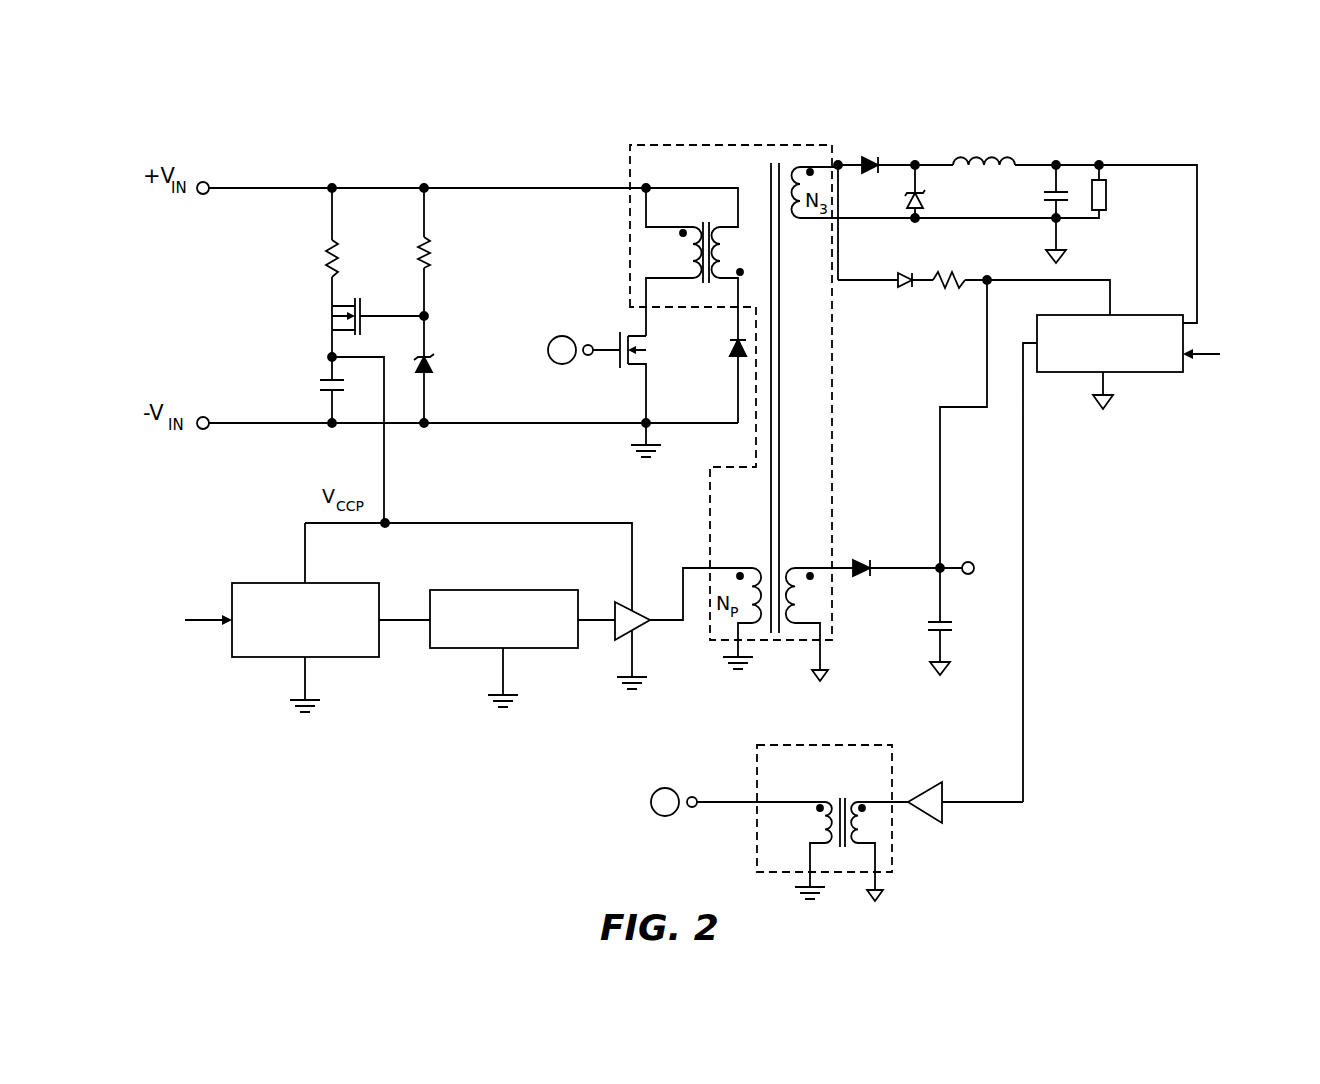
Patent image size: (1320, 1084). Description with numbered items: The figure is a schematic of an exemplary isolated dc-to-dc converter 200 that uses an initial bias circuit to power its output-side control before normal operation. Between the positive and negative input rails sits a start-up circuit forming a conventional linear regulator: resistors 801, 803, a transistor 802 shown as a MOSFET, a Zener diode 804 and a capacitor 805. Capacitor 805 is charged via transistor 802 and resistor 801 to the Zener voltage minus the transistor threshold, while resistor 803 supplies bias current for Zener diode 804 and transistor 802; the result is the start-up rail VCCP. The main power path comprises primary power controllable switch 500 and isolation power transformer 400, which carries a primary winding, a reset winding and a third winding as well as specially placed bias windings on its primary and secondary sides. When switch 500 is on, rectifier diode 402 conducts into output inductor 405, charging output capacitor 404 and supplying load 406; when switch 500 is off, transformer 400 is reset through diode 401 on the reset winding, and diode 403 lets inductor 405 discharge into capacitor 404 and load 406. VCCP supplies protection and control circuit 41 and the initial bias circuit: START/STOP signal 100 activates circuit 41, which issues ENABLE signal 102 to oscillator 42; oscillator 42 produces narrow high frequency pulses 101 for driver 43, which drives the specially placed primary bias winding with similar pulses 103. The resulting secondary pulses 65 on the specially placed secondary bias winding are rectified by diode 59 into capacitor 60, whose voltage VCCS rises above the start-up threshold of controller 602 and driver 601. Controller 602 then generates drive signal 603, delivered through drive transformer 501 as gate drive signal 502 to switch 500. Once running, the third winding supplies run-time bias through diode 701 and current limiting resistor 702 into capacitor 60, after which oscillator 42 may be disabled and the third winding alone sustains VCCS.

The isolated dc-to-dc converter 200 is at (272, 147).
The resistor 801 is at (328, 262).
The transistor 802 is at (330, 310).
The resistor 803 is at (432, 250).
The Zener diode 804 is at (432, 362).
The capacitor 805 is at (324, 381).
The isolation power transformer 400 is at (648, 145).
The primary power controllable switch 500 is at (614, 334).
The diode 401 is at (733, 347).
The rectifier diode 402 is at (868, 160).
The rectifier diode 403 is at (907, 199).
The output capacitor 404 is at (1042, 197).
The output inductor 405 is at (980, 158).
The load 406 is at (1108, 198).
The diode 701 is at (904, 272).
The resistor 702 is at (948, 274).
The controller 602 is at (1120, 314).
The protection and control circuit 41 is at (287, 582).
The oscillator 42 is at (481, 589).
The driver 43 is at (638, 633).
The START/STOP signal 100 is at (205, 630).
The pulses 101 is at (603, 623).
The ENABLE signal 102 is at (405, 624).
The pulses 103 is at (659, 614).
The secondary winding voltage 65 is at (795, 566).
The rectifying diode 59 is at (860, 562).
The capacitor 60 is at (950, 633).
The drive transformer 501 is at (815, 746).
The drive signal 502 is at (718, 800).
The driver 601 is at (934, 790).
The drive signal 603 is at (957, 798).